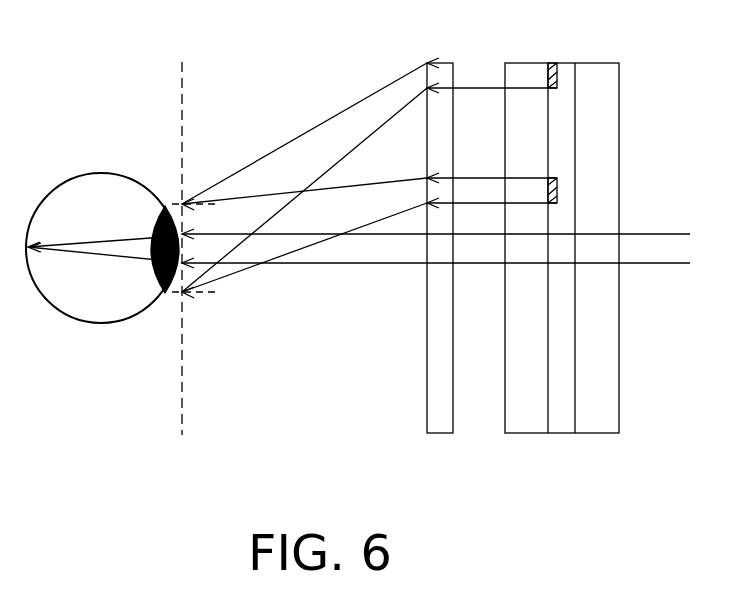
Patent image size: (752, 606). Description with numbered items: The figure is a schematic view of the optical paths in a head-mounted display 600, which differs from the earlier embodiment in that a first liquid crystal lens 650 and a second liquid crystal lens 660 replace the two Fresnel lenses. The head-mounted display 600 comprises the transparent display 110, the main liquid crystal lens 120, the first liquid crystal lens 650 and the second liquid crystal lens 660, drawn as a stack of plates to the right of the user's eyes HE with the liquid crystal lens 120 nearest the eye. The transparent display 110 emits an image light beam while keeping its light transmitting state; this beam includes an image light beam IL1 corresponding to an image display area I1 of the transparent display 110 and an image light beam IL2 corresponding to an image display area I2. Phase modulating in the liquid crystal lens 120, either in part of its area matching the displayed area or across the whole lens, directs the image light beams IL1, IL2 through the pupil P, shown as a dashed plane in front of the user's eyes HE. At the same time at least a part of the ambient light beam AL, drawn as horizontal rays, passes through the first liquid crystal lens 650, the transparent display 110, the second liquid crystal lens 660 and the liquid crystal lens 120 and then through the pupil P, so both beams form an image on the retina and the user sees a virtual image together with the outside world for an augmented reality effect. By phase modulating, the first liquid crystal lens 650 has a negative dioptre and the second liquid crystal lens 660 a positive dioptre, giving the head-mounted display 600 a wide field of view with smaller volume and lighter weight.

The head-mounted display 600 is at (557, 257).
The transparent display 110 is at (560, 68).
The liquid crystal lens 120 is at (440, 403).
The first liquid crystal lens 650 is at (597, 68).
The second liquid crystal lens 660 is at (518, 403).
The image display area I1 is at (557, 80).
The image display area I2 is at (557, 190).
The image light beam IL1 is at (308, 130).
The image light beam IL2 is at (397, 177).
The user's eyes HE is at (88, 307).
The pupil P is at (182, 388).
The ambient light beam AL is at (655, 237).